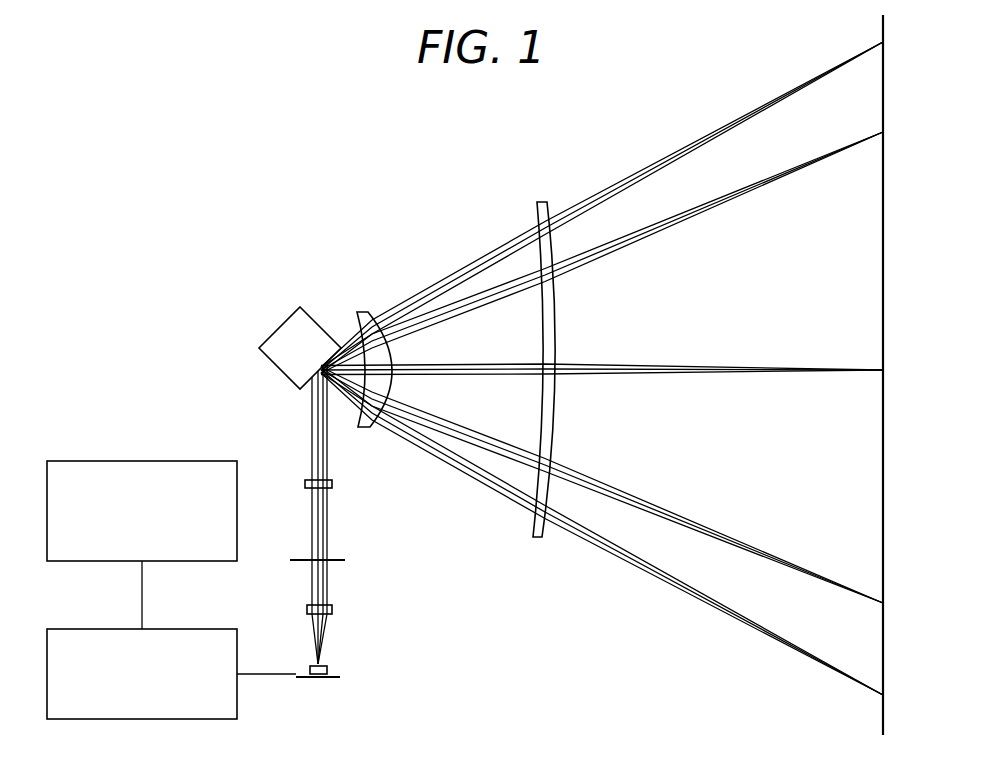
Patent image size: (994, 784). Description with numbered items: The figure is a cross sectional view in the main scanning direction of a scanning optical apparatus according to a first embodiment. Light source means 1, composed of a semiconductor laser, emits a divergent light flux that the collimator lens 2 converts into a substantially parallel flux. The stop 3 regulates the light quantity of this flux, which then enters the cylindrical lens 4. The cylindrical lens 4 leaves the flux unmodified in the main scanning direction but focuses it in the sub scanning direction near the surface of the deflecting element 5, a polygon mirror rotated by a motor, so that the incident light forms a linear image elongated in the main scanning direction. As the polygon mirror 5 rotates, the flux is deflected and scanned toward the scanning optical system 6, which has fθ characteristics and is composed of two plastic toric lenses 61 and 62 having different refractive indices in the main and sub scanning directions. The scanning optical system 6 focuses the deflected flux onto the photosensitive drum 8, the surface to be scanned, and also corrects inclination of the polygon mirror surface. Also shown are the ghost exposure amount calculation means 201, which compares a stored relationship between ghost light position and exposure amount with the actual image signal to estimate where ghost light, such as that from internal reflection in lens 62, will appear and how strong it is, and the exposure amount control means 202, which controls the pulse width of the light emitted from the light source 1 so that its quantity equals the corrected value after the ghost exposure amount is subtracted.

The light source means 1 is at (300, 670).
The collimator lens 2 is at (307, 609).
The stop 3 is at (296, 558).
The cylindrical lens 4 is at (305, 484).
The deflecting element 5 is at (289, 318).
The scanning optical system 6 is at (458, 386).
The plastic lens 61 is at (360, 428).
The plastic lens 62 is at (538, 540).
The photosensitive drum 8 is at (880, 728).
The ghost exposure amount calculation means 201 is at (142, 500).
The exposure amount control means 202 is at (171, 640).